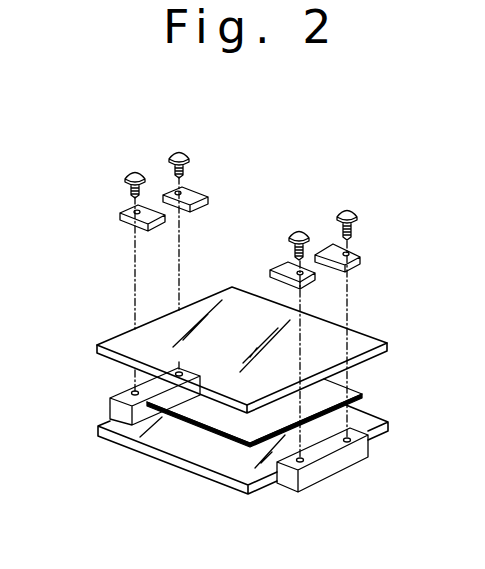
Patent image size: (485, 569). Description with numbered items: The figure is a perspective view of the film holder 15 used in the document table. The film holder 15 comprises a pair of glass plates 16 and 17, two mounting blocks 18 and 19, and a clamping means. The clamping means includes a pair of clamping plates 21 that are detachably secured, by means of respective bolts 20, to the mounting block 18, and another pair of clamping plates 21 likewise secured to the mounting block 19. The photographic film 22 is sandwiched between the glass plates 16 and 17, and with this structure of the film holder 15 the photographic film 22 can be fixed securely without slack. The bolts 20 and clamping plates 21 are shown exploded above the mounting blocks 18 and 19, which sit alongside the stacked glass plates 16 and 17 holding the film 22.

The film holder 15 is at (82, 293).
The glass plate 16 is at (387, 343).
The glass plate 17 is at (388, 423).
The mounting block 18 is at (347, 467).
The mounting block 19 is at (115, 410).
The bolt 20 is at (174, 150).
The clamping plate 21 is at (171, 206).
The photographic film 22 is at (362, 395).